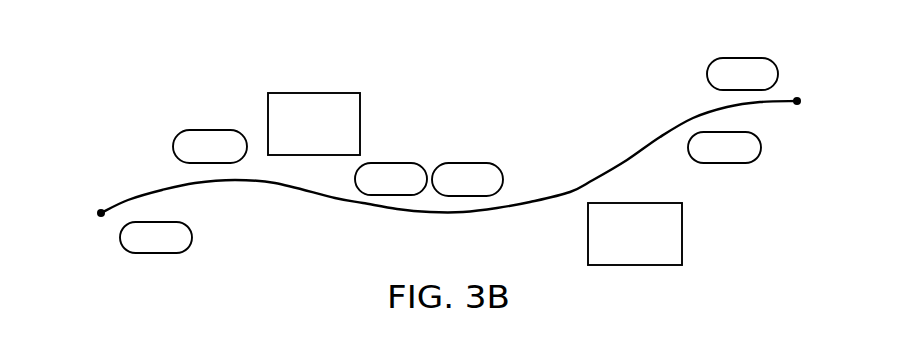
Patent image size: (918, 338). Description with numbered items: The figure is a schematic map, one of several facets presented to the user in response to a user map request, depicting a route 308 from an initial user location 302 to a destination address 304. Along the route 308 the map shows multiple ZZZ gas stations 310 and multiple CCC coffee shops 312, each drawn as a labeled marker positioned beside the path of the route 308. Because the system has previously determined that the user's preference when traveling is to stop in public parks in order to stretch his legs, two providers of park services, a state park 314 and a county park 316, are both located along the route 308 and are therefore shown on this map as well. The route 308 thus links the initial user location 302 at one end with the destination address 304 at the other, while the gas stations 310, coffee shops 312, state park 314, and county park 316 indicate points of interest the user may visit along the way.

The initial user location 302 is at (100, 218).
The destination address 304 is at (798, 93).
The route 308 is at (460, 214).
The ZZZ gas station 310 is at (213, 130).
The CCC coffee shop 312 is at (155, 254).
The state park 314 is at (313, 93).
The county park 316 is at (682, 235).